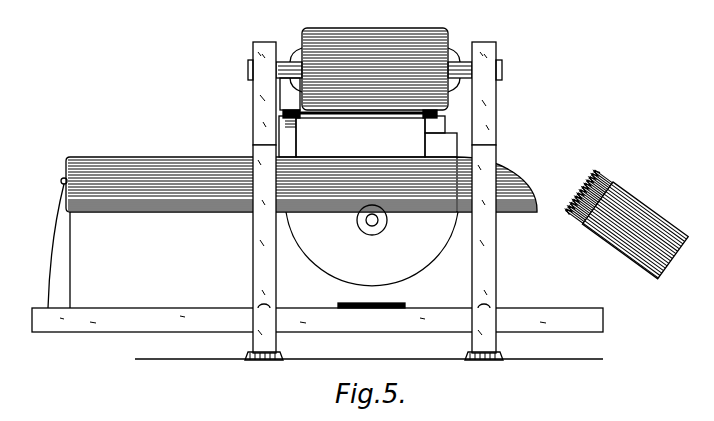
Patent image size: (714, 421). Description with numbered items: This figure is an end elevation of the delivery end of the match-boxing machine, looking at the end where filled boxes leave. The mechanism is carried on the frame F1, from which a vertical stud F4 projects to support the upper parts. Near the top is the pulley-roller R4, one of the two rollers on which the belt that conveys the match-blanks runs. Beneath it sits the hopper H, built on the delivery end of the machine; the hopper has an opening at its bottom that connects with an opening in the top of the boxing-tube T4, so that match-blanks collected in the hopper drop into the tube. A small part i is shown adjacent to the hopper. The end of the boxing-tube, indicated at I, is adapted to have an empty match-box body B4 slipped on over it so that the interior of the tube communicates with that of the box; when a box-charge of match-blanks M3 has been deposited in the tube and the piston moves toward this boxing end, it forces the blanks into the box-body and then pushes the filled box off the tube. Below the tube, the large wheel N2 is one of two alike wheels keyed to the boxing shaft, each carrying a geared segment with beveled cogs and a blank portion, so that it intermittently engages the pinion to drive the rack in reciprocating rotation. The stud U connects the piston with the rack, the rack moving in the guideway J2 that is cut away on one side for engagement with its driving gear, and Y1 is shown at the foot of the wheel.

The guideway J2 is at (327, 320).
The boxing-tube T4 is at (295, 184).
The end of the boxing-tube I is at (503, 173).
The segmentally-geared wheel N2 is at (372, 245).
The bottom pad Y1 is at (407, 305).
The stud U is at (72, 243).
The pulley-roller R4 is at (449, 50).
The hopper H is at (368, 117).
The spring i is at (300, 122).
The vertical stud F4 is at (384, 93).
The frame F1 is at (374, 252).
The match-box body B4 is at (648, 201).
The match-blanks M3 is at (588, 180).